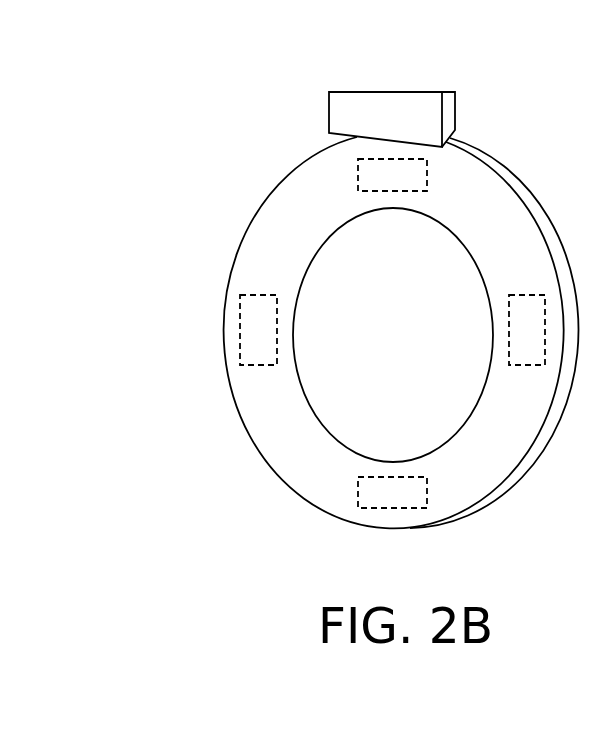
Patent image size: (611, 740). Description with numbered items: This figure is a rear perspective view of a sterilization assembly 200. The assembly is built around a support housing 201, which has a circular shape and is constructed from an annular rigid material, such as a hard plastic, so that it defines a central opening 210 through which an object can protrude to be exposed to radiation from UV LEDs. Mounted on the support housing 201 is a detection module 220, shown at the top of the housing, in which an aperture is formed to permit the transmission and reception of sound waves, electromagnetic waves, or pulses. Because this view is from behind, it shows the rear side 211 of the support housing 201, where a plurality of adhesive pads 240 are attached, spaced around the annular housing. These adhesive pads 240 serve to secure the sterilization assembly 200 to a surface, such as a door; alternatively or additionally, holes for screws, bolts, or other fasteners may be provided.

The sterilization assembly 200 is at (228, 179).
The support housing 201 is at (218, 383).
The central opening 210 is at (413, 358).
The rear side 211 is at (518, 440).
The detection module 220 is at (373, 92).
The adhesive pads 240 is at (240, 317).